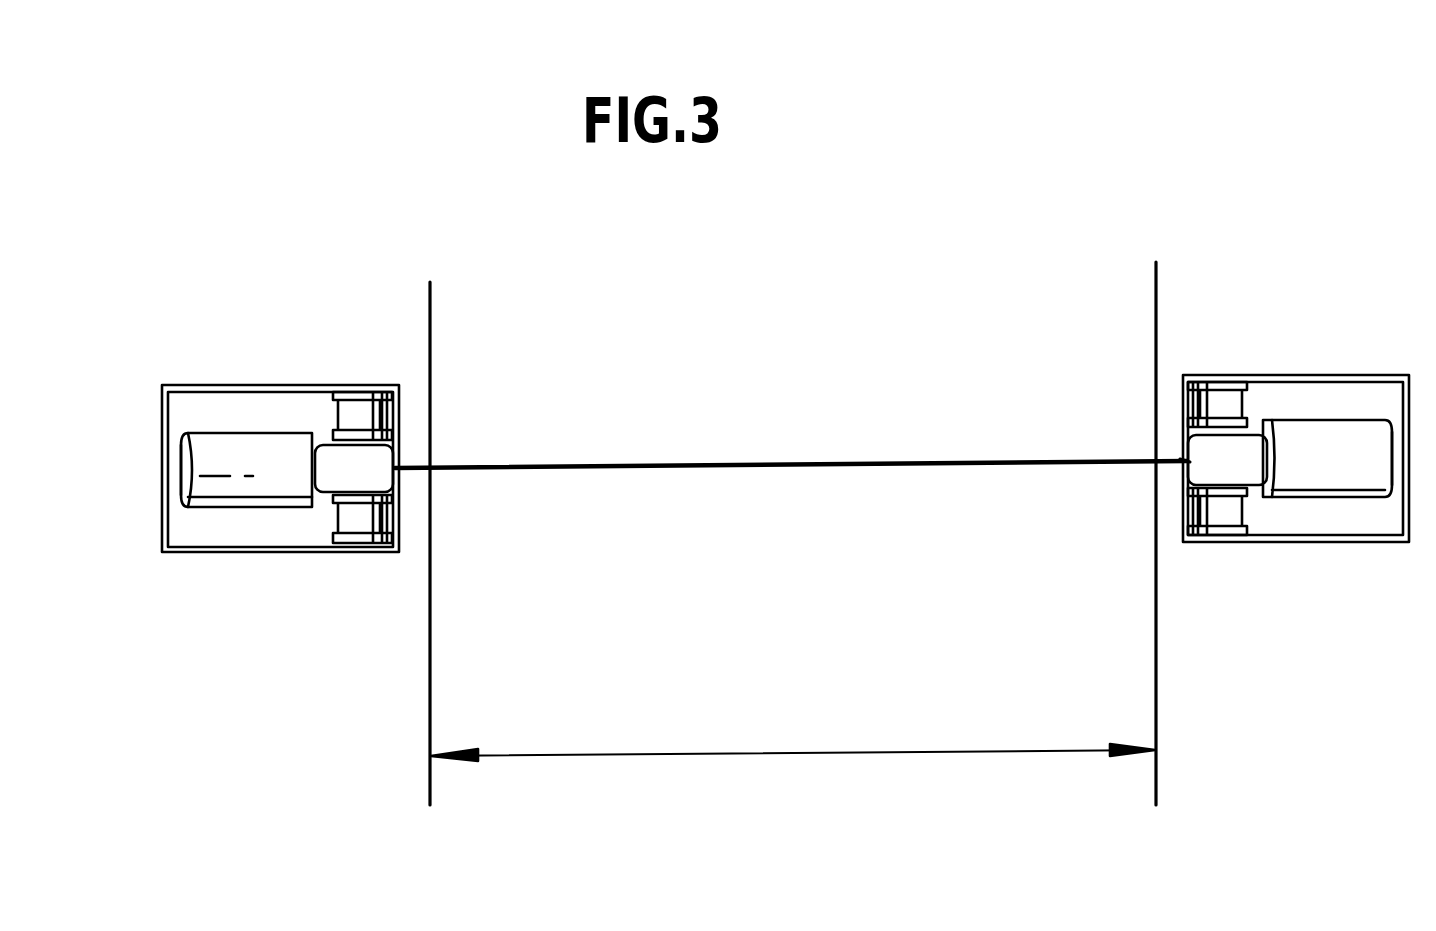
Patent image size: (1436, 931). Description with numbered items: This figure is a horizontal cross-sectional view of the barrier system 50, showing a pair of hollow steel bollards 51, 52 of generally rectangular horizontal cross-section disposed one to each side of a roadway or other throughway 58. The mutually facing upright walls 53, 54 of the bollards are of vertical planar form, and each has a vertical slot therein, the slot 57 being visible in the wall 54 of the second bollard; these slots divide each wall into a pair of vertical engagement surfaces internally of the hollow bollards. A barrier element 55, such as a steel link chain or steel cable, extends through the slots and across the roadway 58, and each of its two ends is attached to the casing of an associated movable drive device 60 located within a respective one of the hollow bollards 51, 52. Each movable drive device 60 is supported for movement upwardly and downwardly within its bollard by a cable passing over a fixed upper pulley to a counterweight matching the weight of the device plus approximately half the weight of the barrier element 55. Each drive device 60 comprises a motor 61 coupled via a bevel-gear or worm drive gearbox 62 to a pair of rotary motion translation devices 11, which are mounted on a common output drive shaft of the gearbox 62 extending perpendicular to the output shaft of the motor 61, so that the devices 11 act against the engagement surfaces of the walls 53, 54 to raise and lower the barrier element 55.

The rotary motion translation device 11 is at (360, 392).
The barrier system 50 is at (1309, 389).
The hollow steel bollard 51 is at (158, 403).
The hollow steel bollard 52 is at (1372, 372).
The upright wall 53 is at (400, 418).
The upright wall 54 is at (1183, 435).
The barrier element 55 is at (847, 465).
The vertical slot 57 is at (1184, 460).
The roadway 58 is at (793, 731).
The movable drive device 60 is at (263, 433).
The motor 61 is at (186, 507).
The gearbox 62 is at (325, 492).